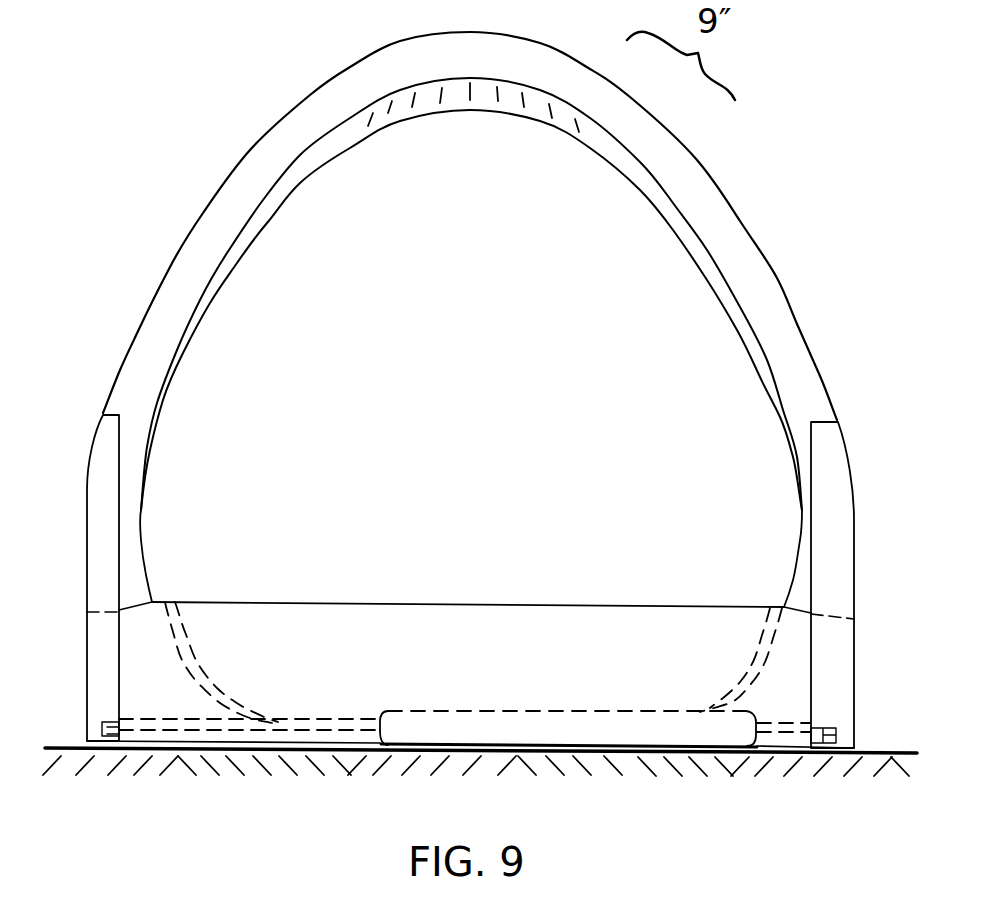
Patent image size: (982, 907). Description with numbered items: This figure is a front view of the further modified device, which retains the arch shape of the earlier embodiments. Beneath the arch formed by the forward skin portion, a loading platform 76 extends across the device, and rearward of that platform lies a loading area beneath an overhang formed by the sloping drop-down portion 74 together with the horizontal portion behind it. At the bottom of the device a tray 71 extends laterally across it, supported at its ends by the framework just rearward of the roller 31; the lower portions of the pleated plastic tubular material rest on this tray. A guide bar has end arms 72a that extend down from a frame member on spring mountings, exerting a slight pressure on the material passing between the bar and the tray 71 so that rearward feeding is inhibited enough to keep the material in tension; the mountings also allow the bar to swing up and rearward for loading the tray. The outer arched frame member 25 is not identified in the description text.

The arched frame 25 is at (738, 247).
The resilient pad with ridges 74 is at (337, 147).
The horizontal support member 76 is at (420, 600).
The flexible curved member 72a is at (185, 652).
The base mounting track 71 is at (350, 724).
The base platform 31 is at (524, 723).